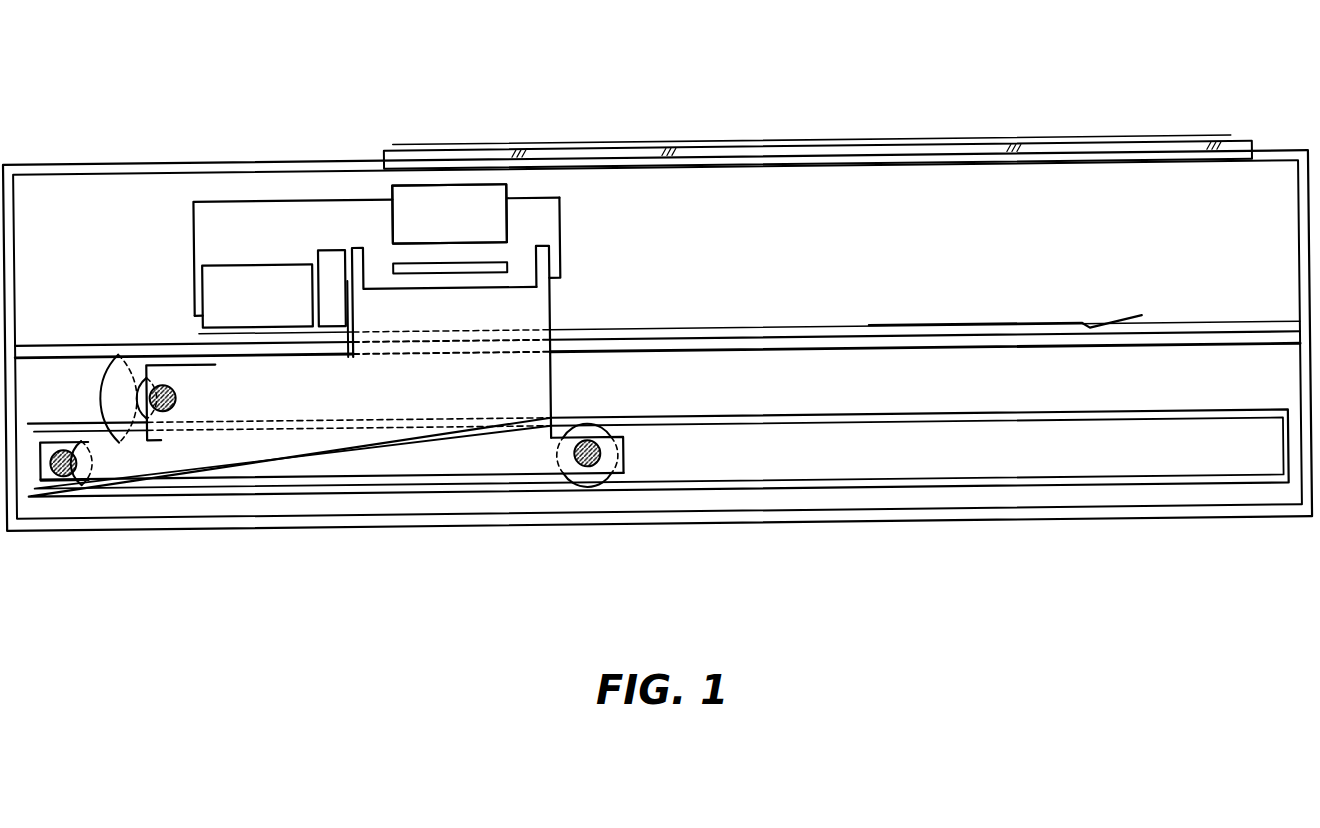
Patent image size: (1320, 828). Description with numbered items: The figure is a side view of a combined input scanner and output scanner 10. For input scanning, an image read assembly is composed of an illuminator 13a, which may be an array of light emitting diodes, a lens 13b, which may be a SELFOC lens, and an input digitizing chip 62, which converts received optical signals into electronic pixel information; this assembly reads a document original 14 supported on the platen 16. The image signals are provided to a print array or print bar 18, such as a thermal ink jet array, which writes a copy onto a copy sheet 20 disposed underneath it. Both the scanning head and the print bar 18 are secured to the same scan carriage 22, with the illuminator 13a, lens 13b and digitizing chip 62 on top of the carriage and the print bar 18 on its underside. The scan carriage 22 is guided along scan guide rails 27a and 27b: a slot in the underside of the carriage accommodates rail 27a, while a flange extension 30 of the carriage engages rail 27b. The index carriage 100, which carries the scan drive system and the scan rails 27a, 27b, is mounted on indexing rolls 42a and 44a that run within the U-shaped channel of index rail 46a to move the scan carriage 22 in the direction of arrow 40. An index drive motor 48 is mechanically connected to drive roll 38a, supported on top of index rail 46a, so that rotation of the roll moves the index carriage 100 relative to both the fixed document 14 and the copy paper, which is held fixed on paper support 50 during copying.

The combined input scanner and output scanner 10 is at (316, 224).
The illuminator 13a is at (448, 220).
The lens 13b is at (449, 166).
The document original 14 is at (872, 148).
The platen 16 is at (772, 161).
The print array or print bar 18 is at (218, 303).
The copy sheet 20 is at (875, 335).
The scan carriage 22 is at (221, 229).
The scan guide rail 27a is at (357, 252).
The scan guide rail 27b is at (547, 251).
The flange extension 30 is at (563, 256).
The drive roll 38a is at (227, 390).
The arrow 40 is at (565, 396).
The indexing roll 42a is at (62, 488).
The indexing roll 44a is at (585, 485).
The index rail 46a is at (1065, 430).
The index drive motor 48 is at (100, 386).
The paper support 50 is at (1227, 341).
The input digitizing chip 62 is at (443, 283).
The index carriage 100 is at (428, 395).